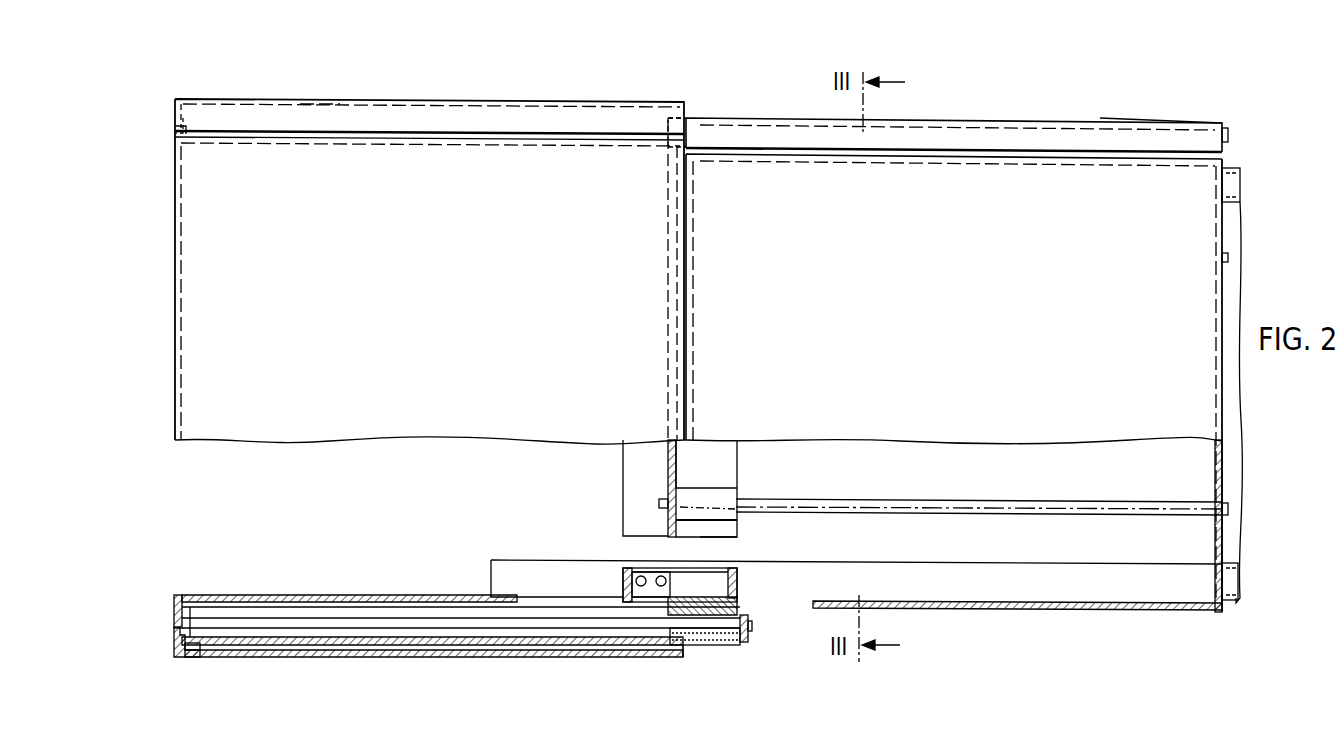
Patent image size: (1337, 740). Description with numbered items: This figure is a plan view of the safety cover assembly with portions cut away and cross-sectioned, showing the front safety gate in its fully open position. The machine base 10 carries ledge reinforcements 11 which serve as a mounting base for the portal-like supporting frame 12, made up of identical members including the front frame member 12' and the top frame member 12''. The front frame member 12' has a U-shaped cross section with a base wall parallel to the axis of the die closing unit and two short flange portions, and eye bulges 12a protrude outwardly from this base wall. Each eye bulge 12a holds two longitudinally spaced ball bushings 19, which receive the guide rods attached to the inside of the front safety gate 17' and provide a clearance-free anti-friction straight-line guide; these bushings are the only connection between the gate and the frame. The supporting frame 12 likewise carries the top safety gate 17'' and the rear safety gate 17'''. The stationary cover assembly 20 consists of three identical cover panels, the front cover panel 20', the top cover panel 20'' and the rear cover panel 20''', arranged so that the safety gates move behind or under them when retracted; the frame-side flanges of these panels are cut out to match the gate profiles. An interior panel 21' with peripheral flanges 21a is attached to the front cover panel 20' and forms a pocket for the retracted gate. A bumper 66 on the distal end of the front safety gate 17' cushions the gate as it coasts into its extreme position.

The machine base 10 is at (1239, 548).
The ledge reinforcements 11 is at (505, 582).
The supporting frame 12 is at (715, 488).
The front frame member 12' is at (646, 585).
The top frame member 12'' is at (635, 464).
The eye bulges 12a is at (720, 605).
The front safety gate 17' is at (434, 675).
The top safety gate 17'' is at (954, 340).
The rear safety gate 17''' is at (1156, 95).
The ball bushings 19 is at (700, 646).
The cover assembly 20 is at (429, 239).
The front cover panel 20' is at (432, 669).
The top cover panel 20'' is at (429, 251).
The rear cover panel 20''' is at (430, 81).
The interior panel 21' is at (349, 572).
The peripheral flanges 21a is at (190, 596).
The bumper 66 is at (198, 650).